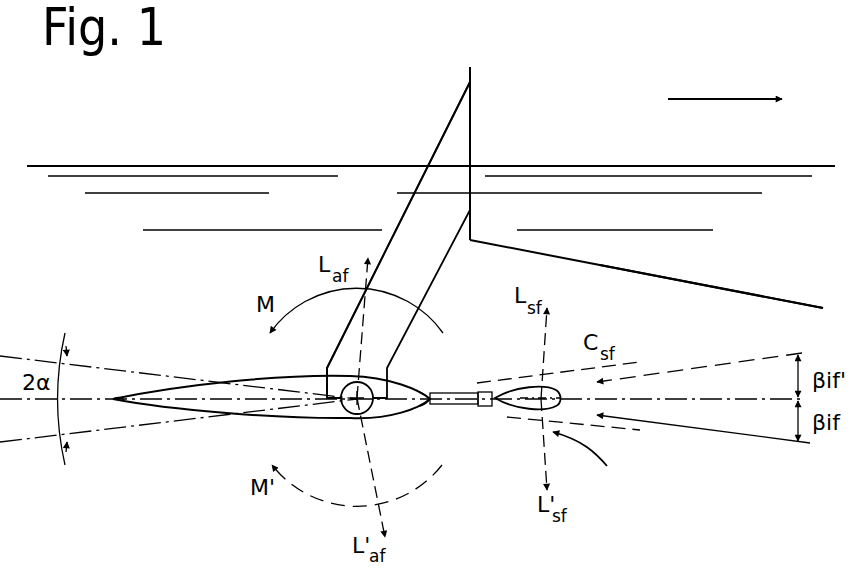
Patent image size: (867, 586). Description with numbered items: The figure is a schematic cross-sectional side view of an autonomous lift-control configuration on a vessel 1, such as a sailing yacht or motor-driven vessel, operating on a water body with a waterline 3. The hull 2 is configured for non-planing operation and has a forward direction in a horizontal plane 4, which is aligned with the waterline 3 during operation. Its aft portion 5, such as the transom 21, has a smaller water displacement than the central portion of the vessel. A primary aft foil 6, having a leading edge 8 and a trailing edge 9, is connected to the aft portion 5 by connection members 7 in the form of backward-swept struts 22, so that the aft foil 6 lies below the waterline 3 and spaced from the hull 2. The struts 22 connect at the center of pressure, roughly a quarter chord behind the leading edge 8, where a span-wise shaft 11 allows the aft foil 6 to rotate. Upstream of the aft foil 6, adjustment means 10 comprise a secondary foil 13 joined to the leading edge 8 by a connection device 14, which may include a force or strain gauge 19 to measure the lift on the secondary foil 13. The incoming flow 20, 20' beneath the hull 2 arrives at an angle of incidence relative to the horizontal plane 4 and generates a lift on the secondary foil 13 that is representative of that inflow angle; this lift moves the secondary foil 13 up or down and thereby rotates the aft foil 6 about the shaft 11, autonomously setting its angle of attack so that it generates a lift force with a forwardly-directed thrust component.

The vessel 1 is at (462, 67).
The hull 2 is at (533, 252).
The waterline 3 is at (66, 166).
The horizontal plane 4 is at (705, 99).
The aft portion 5 is at (653, 272).
The aft foil 6 is at (240, 411).
The connection member 7 is at (403, 215).
The leading edge 8 is at (427, 406).
The trailing edge 9 is at (113, 401).
The adjustment means 10 is at (593, 461).
The shaft 11 is at (354, 414).
The secondary foil 13 is at (530, 409).
The connection device 14 is at (470, 393).
The force or strain gauge 19 is at (488, 407).
The incoming flow 20 is at (703, 450).
The incoming flow 20' is at (699, 351).
The transom 21 is at (468, 137).
The strut 22 is at (403, 215).